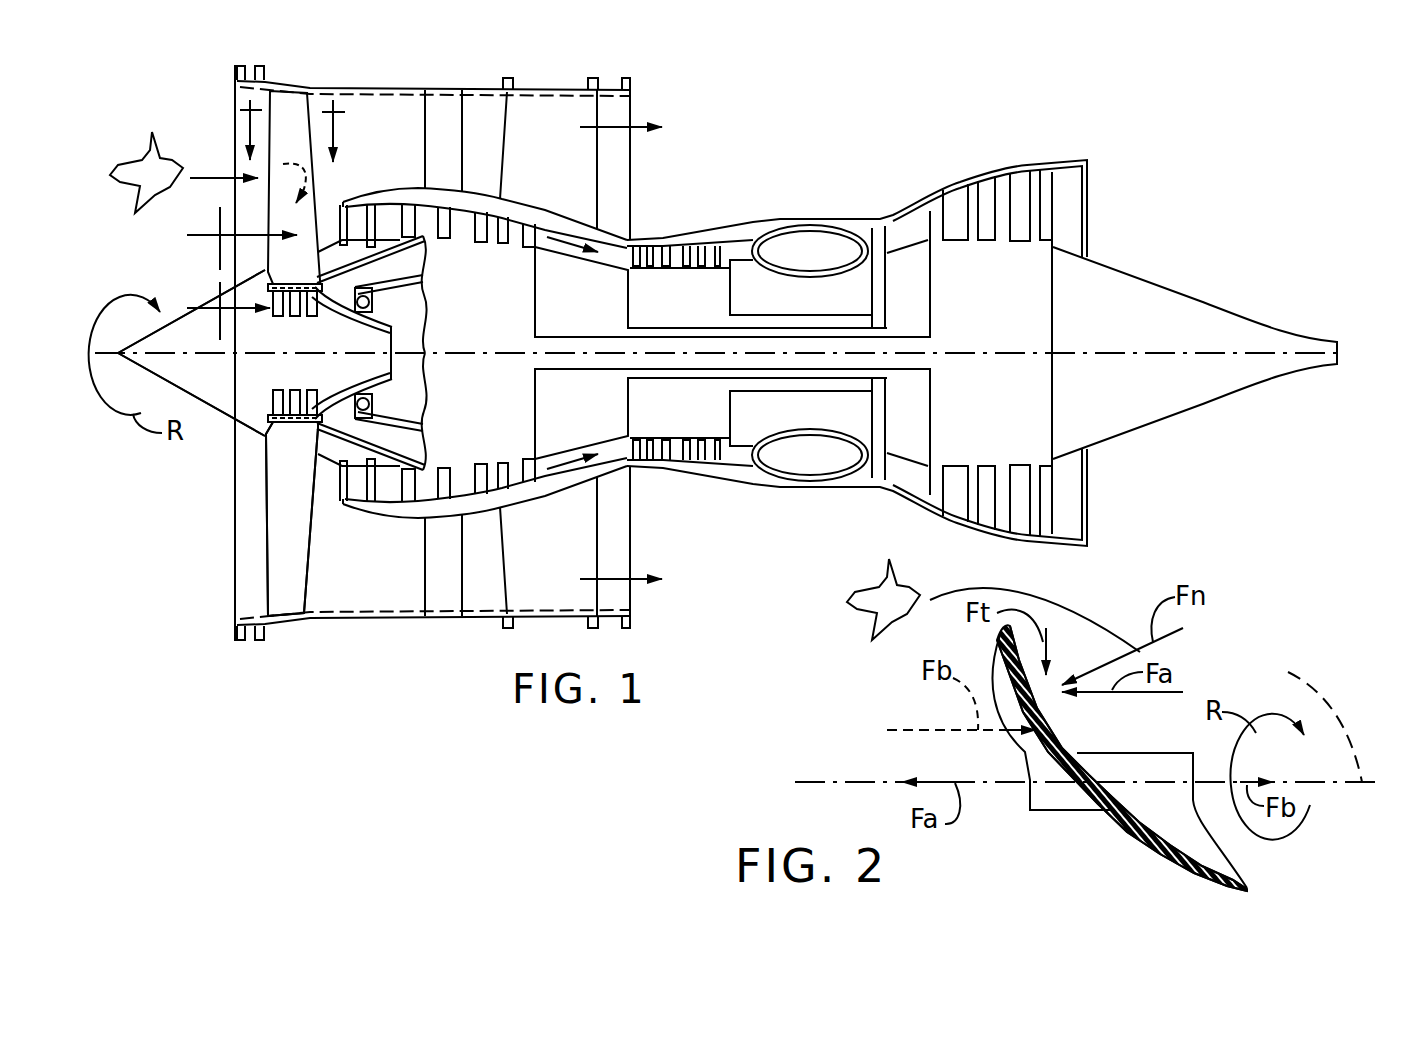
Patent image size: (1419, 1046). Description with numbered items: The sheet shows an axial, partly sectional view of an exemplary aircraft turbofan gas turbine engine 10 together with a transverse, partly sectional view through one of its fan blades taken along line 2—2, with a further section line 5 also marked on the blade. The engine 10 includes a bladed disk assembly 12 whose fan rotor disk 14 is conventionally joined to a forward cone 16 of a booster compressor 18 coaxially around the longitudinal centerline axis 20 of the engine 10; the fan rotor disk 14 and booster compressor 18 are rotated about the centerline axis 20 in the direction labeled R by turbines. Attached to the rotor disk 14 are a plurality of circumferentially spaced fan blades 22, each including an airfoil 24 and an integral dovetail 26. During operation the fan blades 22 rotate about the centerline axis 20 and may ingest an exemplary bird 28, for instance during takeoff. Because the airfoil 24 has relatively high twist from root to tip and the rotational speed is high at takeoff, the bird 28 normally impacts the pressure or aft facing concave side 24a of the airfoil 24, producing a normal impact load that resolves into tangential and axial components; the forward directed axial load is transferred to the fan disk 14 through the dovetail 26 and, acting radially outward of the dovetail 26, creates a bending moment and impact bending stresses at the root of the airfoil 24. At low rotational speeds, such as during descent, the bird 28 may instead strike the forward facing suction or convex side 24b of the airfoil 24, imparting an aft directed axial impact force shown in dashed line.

In FIG. 1, the turbofan gas turbine engine 10 is at (712, 213).
In FIG. 1, the bladed disk assembly 12 is at (242, 452).
In FIG. 1, the fan rotor disk 14 is at (291, 391).
In FIG. 1, the forward cone 16 is at (358, 267).
In FIG. 1, the booster compressor 18 is at (489, 308).
In FIG. 1, the longitudinal centerline axis 20 is at (1040, 354).
In FIG. 2, the longitudinal centerline axis 20 is at (1306, 717).
In FIG. 1, the fan blades 22 is at (258, 528).
In FIG. 2, the fan blades 22 is at (1120, 826).
In FIG. 1, the airfoil 24 is at (290, 563).
In FIG. 2, the pressure side 24a is at (1065, 746).
In FIG. 2, the suction side 24b is at (1045, 741).
In FIG. 1, the dovetail 26 is at (265, 402).
In FIG. 1, the bird 28 is at (143, 172).
In FIG. 2, the bird 28 is at (876, 604).
In FIG. 1, the section line 2— 2 is at (289, 126).
In FIG. 1, the section line 5- 5 is at (242, 275).